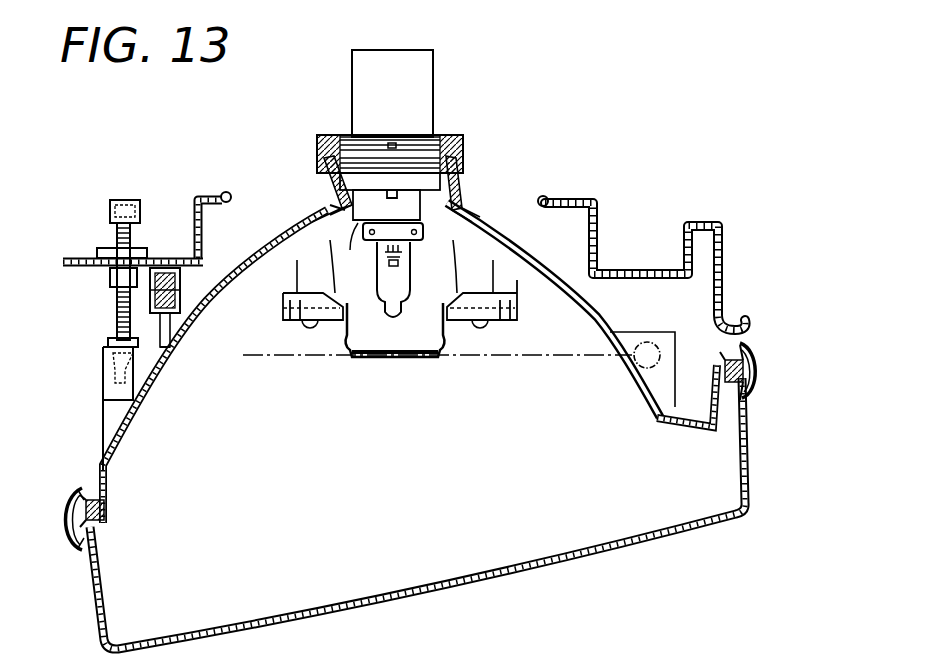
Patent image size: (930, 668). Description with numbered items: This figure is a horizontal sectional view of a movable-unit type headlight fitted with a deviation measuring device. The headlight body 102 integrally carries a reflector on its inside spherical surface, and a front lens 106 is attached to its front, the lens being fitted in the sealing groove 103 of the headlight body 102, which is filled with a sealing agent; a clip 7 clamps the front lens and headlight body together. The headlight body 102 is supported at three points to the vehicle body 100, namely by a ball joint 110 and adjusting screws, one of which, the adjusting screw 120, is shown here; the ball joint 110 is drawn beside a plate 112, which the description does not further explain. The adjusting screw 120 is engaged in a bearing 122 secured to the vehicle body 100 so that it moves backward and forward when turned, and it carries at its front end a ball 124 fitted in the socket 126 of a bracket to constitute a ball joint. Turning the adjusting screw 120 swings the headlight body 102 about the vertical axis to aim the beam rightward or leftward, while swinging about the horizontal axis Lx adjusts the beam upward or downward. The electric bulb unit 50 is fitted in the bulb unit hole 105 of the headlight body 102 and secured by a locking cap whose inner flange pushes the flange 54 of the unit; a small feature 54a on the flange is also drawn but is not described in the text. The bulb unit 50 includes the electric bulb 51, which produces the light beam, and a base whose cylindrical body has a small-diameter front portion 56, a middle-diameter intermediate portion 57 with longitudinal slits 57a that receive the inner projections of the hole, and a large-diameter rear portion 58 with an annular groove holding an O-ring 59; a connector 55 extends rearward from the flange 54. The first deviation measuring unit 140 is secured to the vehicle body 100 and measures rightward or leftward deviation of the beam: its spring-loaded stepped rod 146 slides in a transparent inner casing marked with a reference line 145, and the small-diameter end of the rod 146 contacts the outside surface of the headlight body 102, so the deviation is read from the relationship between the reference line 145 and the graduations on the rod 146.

The clip 7 is at (67, 525).
The electric bulb unit 50 is at (337, 102).
The electric bulb 51 is at (410, 278).
The flange 54 is at (412, 150).
The holder slot 54a is at (393, 147).
The connector 55 is at (433, 63).
The front portion 56 is at (400, 290).
The intermediate portion 57 is at (433, 180).
The longitudinal slits 57a is at (358, 223).
The rear portion 58 is at (320, 151).
The O-ring 59 is at (410, 167).
The vehicle body 100 is at (627, 267).
The headlight body 102 is at (483, 218).
The sealing groove 103 is at (103, 507).
The bulb unit hole 105 is at (348, 197).
The front lens 106 is at (407, 593).
The ball joint 110 is at (685, 341).
The pivot plate 112 is at (655, 343).
The adjusting screw 120 is at (104, 308).
The bearing 122 is at (110, 250).
The ball 124 is at (103, 358).
The socket 126 is at (102, 398).
The first deviation measuring unit 140 is at (195, 281).
The reference line 145 is at (177, 300).
The stepped rod 146 is at (170, 332).
The horizontal axis Lx is at (519, 360).